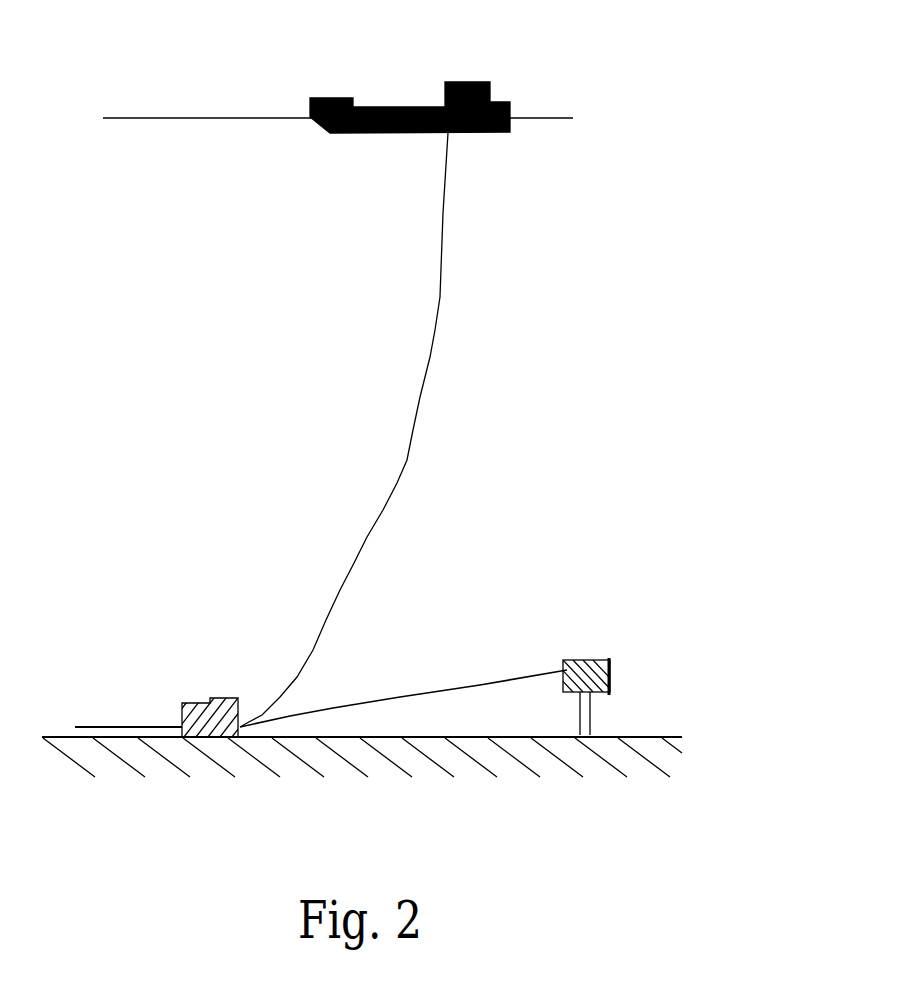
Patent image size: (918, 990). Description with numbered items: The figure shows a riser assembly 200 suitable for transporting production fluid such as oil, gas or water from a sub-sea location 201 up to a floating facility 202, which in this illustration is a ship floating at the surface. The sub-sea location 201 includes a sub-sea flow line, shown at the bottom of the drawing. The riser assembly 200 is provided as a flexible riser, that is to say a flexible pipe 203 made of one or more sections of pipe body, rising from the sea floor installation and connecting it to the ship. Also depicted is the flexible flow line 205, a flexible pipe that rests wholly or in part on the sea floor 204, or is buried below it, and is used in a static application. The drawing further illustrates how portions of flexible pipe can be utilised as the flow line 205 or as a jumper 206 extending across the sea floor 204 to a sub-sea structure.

The riser assembly 200 is at (362, 438).
The sub-sea location 201 is at (190, 702).
The floating facility 202 is at (320, 98).
The flexible pipe 203 is at (343, 587).
The sea floor 204 is at (415, 735).
The flow line 205 is at (130, 728).
The jumper 206 is at (488, 682).